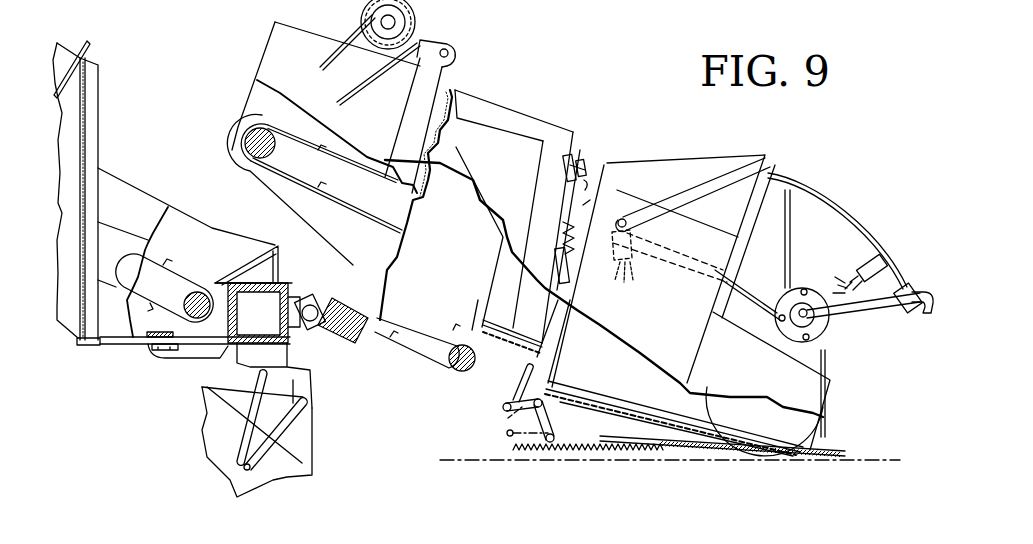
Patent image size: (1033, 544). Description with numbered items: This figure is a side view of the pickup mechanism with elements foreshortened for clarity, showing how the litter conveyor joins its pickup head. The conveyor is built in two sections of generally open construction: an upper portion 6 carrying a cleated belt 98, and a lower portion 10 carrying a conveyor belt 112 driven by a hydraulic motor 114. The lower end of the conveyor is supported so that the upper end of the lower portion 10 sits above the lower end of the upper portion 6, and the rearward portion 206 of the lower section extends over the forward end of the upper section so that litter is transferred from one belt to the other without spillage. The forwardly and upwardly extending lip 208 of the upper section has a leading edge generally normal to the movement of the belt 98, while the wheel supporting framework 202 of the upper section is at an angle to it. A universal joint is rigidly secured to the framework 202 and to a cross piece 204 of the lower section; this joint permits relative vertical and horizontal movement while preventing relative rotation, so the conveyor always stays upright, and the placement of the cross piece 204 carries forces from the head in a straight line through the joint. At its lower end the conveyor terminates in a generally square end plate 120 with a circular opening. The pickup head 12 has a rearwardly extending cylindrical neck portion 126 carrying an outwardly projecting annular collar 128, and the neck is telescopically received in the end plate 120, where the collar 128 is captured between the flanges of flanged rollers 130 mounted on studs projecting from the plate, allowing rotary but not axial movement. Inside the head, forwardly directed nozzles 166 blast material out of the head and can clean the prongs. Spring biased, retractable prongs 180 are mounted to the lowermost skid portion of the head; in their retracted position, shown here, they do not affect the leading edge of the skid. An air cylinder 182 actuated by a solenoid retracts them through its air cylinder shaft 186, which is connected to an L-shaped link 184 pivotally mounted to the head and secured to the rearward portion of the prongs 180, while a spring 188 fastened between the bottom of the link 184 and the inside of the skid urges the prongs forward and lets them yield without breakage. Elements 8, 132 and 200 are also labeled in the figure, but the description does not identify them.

The upper portion of the conveyor 6 is at (118, 131).
The lower frame 8 is at (298, 463).
The lower portion of the conveyor 10 is at (52, 222).
The pickup head 12 is at (718, 458).
The cleated belt 98 is at (188, 280).
The conveyor belt 112 is at (345, 176).
The hydraulic motor 114 is at (415, 22).
The end plate 120 is at (562, 140).
The cylindrical neck portion 126 is at (582, 268).
The annular collar 128 is at (583, 153).
The flanged rollers 130 is at (575, 405).
The door 132 is at (631, 378).
The nozzles 166 is at (640, 257).
The prongs 180 is at (685, 447).
The air cylinder 182 is at (610, 197).
The link 184 is at (508, 418).
The air cylinder shaft 186 is at (518, 383).
The spring 188 is at (563, 452).
The frame 200 is at (313, 343).
The wheel supporting framework 202 is at (238, 363).
The cross piece 204 is at (370, 345).
The rearward portion 206 is at (242, 157).
The lip 208 is at (187, 213).